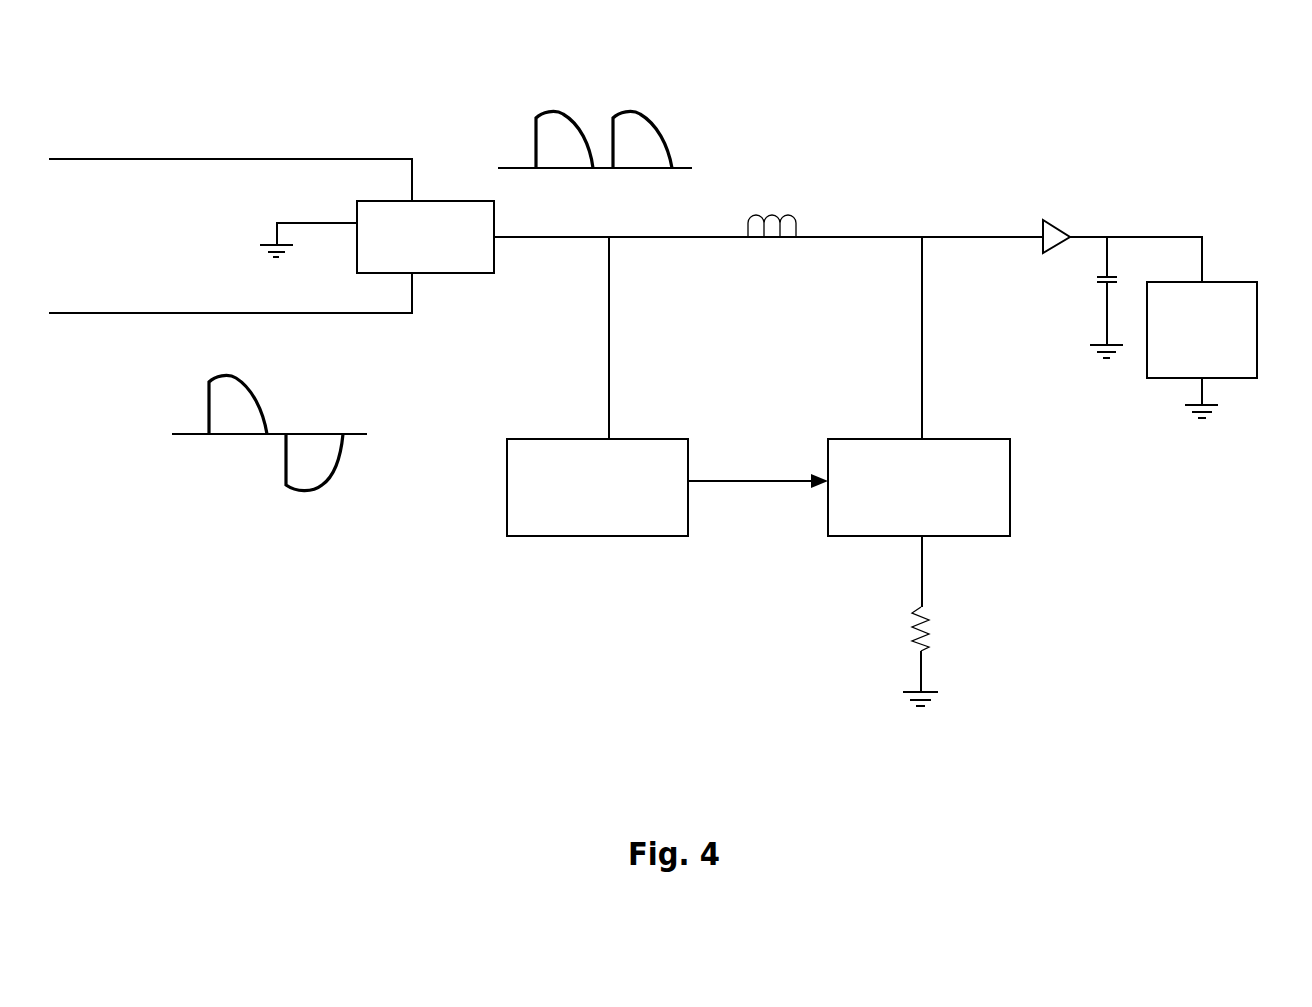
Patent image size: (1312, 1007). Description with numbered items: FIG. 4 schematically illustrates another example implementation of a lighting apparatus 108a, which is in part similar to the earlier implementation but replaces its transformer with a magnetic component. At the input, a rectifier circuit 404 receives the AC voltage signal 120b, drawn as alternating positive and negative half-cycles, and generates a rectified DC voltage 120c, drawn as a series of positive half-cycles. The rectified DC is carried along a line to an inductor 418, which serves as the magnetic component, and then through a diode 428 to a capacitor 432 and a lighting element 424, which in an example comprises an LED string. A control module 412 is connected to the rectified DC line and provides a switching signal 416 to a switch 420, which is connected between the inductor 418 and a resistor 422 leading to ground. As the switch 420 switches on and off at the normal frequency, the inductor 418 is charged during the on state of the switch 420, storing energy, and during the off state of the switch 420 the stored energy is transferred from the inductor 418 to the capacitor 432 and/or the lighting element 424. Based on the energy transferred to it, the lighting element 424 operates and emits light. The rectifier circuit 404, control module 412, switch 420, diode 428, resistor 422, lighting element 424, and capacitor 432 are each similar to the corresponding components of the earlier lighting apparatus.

The lighting apparatus 108a is at (1144, 104).
The AC voltage signal 120b is at (368, 406).
The rectified DC voltage 120c is at (683, 92).
The rectifier circuit 404 is at (425, 237).
The control module 412 is at (597, 487).
The switching signal 416 is at (758, 505).
The inductor 418 is at (780, 256).
The switch 420 is at (919, 487).
The resistor 422 is at (969, 621).
The lighting element 424 is at (1202, 350).
The diode 428 is at (1059, 222).
The capacitor 432 is at (1060, 297).